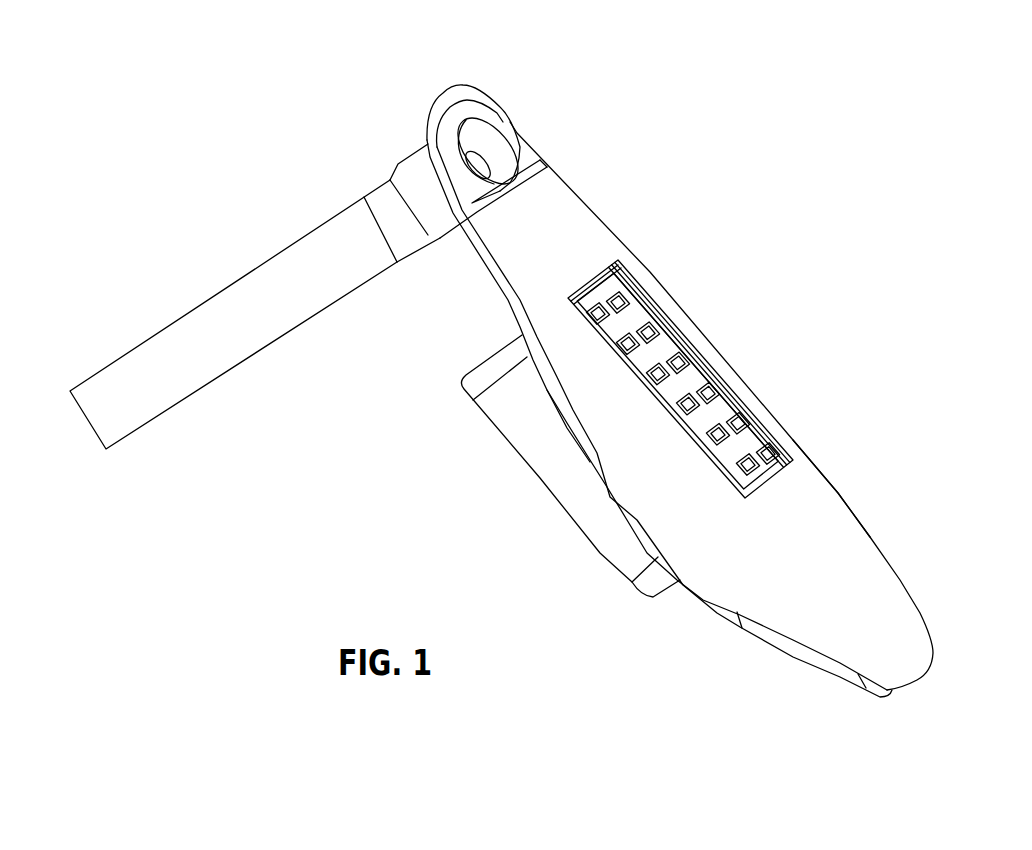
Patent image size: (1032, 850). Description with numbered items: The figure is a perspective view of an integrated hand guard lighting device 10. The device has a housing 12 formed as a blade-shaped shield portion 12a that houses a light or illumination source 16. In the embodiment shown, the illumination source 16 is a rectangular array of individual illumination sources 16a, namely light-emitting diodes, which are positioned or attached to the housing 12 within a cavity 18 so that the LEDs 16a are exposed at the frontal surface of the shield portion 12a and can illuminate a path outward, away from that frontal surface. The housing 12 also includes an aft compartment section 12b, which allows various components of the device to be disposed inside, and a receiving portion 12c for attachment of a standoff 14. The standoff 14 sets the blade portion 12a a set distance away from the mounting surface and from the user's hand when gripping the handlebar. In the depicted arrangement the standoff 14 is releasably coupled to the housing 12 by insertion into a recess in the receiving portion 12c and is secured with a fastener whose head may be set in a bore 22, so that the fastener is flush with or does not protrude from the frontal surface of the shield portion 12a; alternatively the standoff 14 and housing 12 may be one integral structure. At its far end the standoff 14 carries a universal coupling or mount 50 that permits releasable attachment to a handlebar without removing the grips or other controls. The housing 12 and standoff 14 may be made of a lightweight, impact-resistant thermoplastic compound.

The integrated hand guard lighting device 10 is at (398, 60).
The housing 12 is at (588, 202).
The blade-shaped shield portion 12a is at (838, 493).
The aft compartment section 12b is at (610, 565).
The receiving portion 12c is at (398, 163).
The standoff 14 is at (258, 353).
The illumination source 16 is at (713, 413).
The illumination sources / LEDs 16a is at (643, 353).
The cavity 18 is at (582, 267).
The bore 22 is at (517, 133).
The universal coupling or mount 50 is at (92, 360).